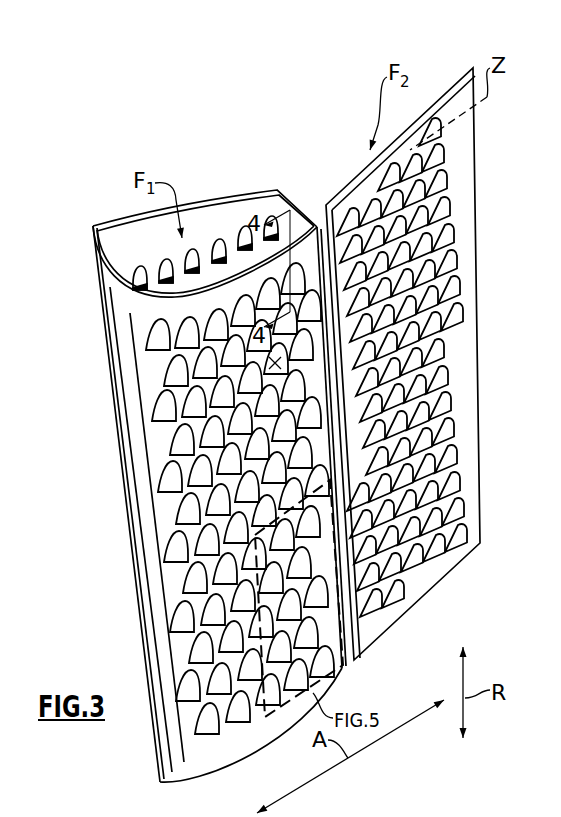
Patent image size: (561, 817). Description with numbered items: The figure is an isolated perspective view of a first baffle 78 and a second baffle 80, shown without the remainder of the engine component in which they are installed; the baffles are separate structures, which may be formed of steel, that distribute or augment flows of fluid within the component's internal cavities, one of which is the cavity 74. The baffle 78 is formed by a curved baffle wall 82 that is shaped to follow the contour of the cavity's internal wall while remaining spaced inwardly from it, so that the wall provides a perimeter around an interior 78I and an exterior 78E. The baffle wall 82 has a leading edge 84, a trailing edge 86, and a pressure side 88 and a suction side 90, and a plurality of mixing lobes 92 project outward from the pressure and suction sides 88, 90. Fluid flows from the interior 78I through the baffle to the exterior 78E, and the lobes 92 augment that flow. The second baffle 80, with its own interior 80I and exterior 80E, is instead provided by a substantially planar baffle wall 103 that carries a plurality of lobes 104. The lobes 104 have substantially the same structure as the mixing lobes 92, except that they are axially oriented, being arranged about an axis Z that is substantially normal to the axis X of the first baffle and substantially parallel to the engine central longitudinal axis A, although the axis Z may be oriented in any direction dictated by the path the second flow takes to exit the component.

The cavity 74 is at (560, 783).
The baffle 78 is at (132, 212).
The exterior of the baffle 78E is at (110, 295).
The interior of the baffle 78I is at (123, 253).
The baffle 80 is at (447, 78).
The exterior surface of second panel 80E is at (453, 100).
The interior surface of second panel 80I is at (353, 172).
The baffle wall 82 is at (143, 313).
The leading edge 84 is at (113, 463).
The trailing edge 86 is at (293, 205).
The pressure side 88 is at (245, 192).
The suction side 90 is at (258, 740).
The mixing lobes 92 is at (180, 363).
The baffle wall 103 is at (460, 127).
The lobes 104 is at (440, 203).